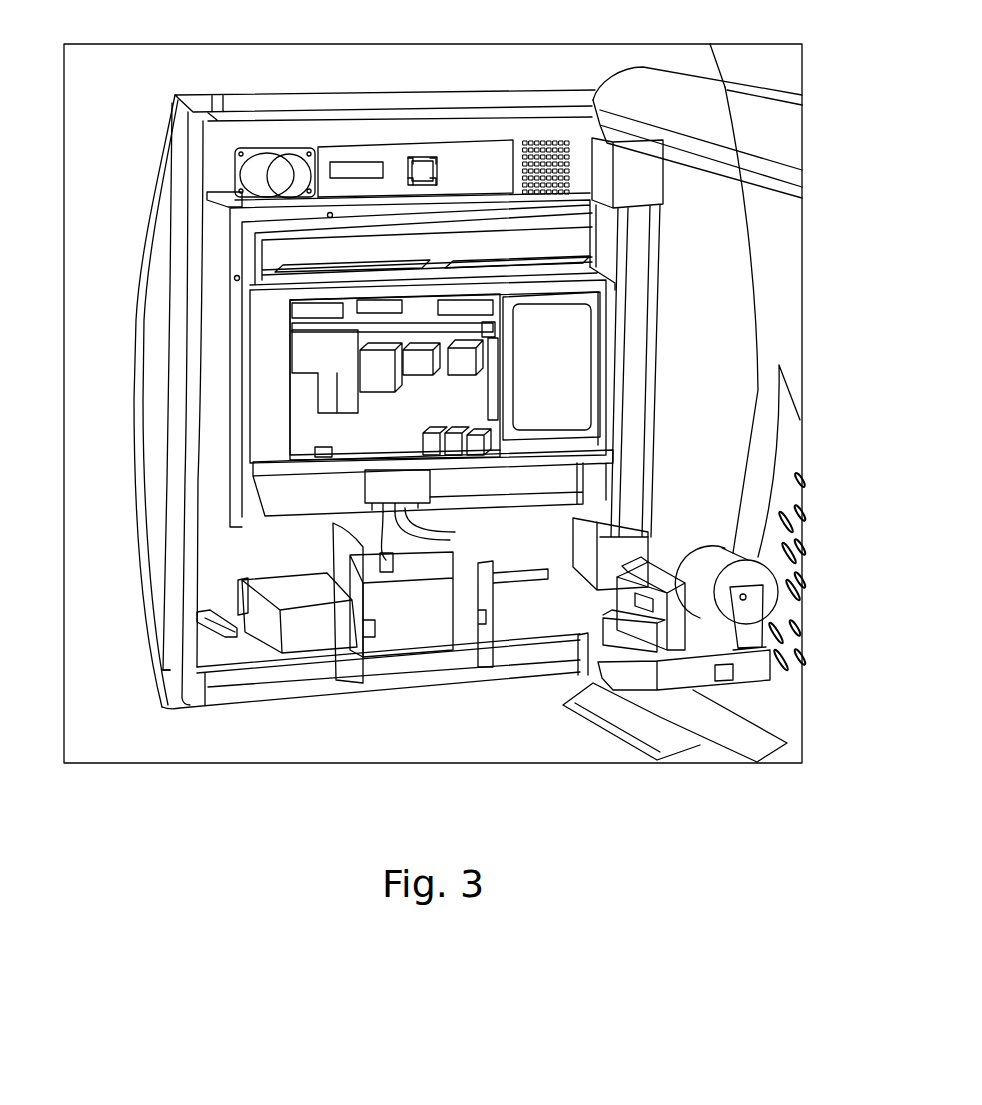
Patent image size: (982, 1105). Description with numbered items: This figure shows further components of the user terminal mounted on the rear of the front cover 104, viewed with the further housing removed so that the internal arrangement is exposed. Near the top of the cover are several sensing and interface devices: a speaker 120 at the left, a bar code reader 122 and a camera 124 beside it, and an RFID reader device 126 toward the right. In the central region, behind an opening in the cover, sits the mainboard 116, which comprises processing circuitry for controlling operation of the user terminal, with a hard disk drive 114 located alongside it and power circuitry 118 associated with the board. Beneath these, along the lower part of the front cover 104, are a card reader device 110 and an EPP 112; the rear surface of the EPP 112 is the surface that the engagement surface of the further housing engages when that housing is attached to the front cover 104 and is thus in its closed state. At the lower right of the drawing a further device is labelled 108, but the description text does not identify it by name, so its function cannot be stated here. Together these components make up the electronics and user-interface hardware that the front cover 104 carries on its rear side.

The front cover 104 is at (452, 90).
The printer 108 is at (703, 687).
The card reader device 110 is at (293, 647).
The EPP 112 is at (410, 647).
The hard disk drive (HDD) 114 is at (558, 422).
The mainboard 116 is at (380, 405).
The power circuitry 118 is at (292, 442).
The speaker 120 is at (235, 185).
The bar code reader 122 is at (337, 150).
The camera 124 is at (425, 158).
The RFID reader device 126 is at (495, 153).